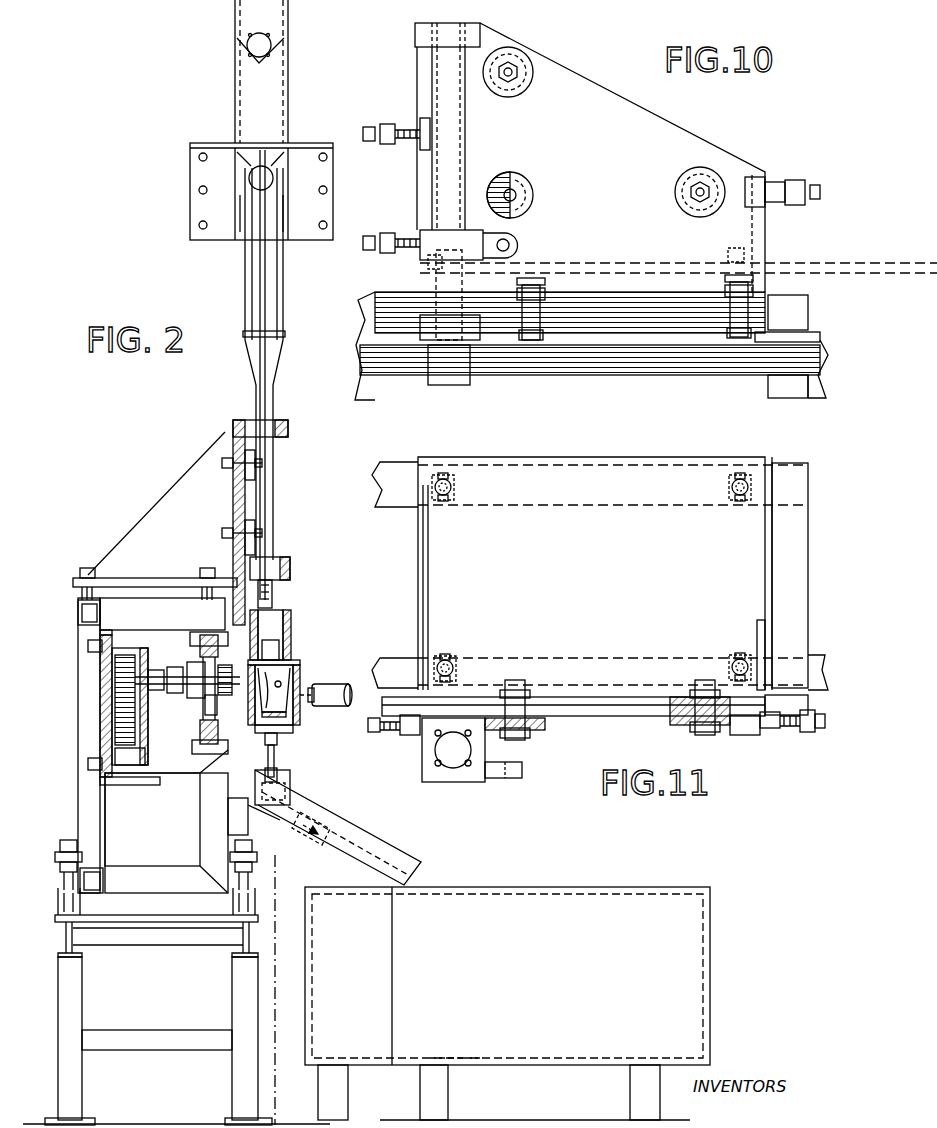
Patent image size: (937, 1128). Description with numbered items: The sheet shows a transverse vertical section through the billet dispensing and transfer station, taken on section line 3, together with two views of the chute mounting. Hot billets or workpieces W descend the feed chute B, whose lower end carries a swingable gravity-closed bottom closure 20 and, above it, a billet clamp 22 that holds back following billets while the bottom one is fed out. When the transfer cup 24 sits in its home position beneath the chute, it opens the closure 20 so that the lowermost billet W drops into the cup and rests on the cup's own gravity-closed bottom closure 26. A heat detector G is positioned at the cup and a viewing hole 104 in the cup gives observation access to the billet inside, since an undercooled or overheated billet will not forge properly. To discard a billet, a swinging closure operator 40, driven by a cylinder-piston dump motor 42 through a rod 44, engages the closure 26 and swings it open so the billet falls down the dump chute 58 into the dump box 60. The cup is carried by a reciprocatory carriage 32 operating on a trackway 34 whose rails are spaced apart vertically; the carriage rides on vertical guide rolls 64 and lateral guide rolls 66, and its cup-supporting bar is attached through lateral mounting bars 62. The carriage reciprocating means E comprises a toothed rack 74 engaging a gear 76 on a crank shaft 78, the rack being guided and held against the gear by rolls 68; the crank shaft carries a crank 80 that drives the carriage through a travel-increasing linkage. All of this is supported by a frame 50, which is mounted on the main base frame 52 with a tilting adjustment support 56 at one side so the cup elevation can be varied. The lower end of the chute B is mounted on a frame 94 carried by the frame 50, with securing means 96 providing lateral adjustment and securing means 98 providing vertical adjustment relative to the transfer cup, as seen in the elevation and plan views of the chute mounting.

In FIG. 2, the feed chute B is at (245, 285).
In FIG. 10, the feed chute B is at (430, 85).
In FIG. 11, the feed chute B is at (438, 765).
In FIG. 2, the section line indicator 3 is at (270, 398).
In FIG. 2, the frame 94 is at (152, 505).
In FIG. 10, the frame 94 is at (675, 125).
In FIG. 11, the frame 94 is at (636, 586).
In FIG. 2, the frame 50 is at (78, 618).
In FIG. 10, the frame 50 is at (380, 296).
In FIG. 11, the frame 50 is at (400, 470).
In FIG. 2, the main base frame 52 is at (56, 957).
In FIG. 2, the tilting adjustment support 56 is at (57, 897).
In FIG. 2, the carriage reciprocating means E is at (100, 713).
In FIG. 2, the gear 76 is at (100, 680).
In FIG. 2, the toothed rack 74 is at (122, 662).
In FIG. 2, the crank shaft 78 is at (160, 674).
In FIG. 2, the reciprocatory carriage 32 is at (200, 690).
In FIG. 2, the crank 80 is at (165, 699).
In FIG. 2, the vertical guide rolls 64 is at (232, 665).
In FIG. 2, the lateral mounting bars 62 is at (220, 708).
In FIG. 2, the lateral guide rolls 66 is at (198, 644).
In FIG. 2, the trackway 34 is at (215, 645).
In FIG. 10, the trackway 34 is at (614, 375).
In FIG. 11, the trackway 34 is at (394, 670).
In FIG. 2, the rolls 68 is at (150, 740).
In FIG. 2, the billet clamp 22 is at (272, 598).
In FIG. 2, the dispensing head D is at (298, 635).
In FIG. 2, the bottom closure 20 is at (285, 662).
In FIG. 2, the transfer cup 24 is at (290, 706).
In FIG. 2, the viewing hole 104 is at (296, 688).
In FIG. 2, the heat detector G is at (342, 706).
In FIG. 2, the cup bottom closure 26 is at (280, 730).
In FIG. 2, the closure operator 40 is at (272, 742).
In FIG. 2, the rod 44 is at (268, 760).
In FIG. 2, the cylinder-piston dump motor 42 is at (282, 782).
In FIG. 2, the billets W is at (335, 826).
In FIG. 2, the dump chute 58 is at (402, 860).
In FIG. 2, the dump box 60 is at (590, 966).
In FIG. 10, the securing means 98 is at (520, 88).
In FIG. 11, the securing means 98 is at (520, 740).
In FIG. 10, the securing means 96 is at (418, 266).
In FIG. 11, the securing means 96 is at (452, 490).